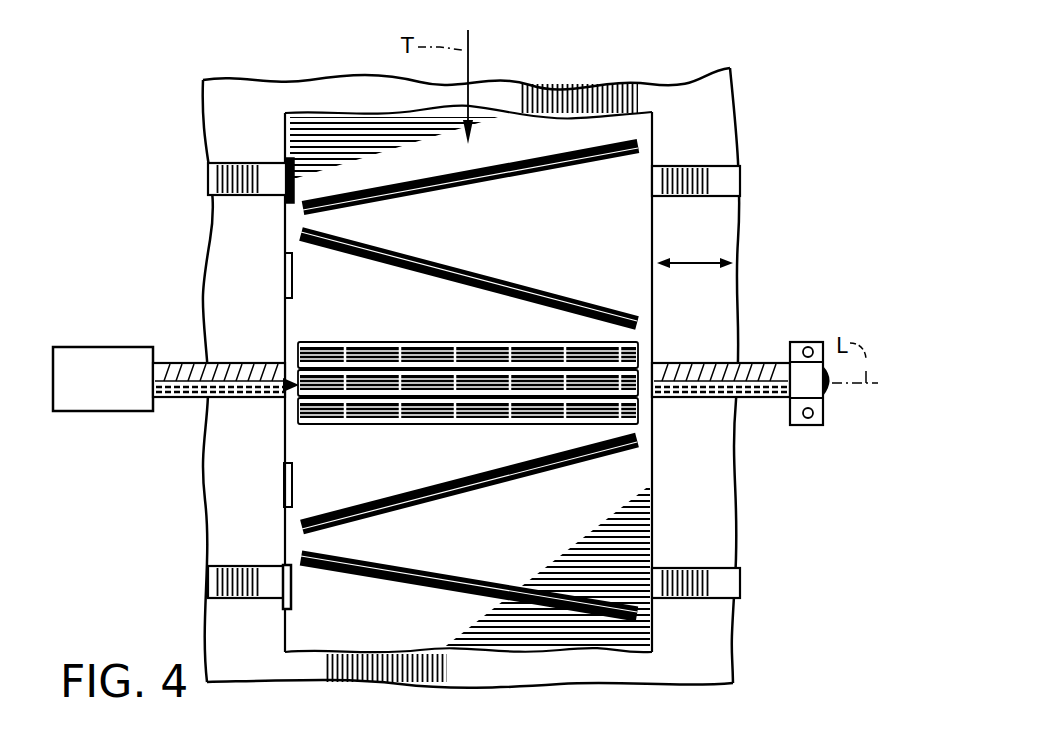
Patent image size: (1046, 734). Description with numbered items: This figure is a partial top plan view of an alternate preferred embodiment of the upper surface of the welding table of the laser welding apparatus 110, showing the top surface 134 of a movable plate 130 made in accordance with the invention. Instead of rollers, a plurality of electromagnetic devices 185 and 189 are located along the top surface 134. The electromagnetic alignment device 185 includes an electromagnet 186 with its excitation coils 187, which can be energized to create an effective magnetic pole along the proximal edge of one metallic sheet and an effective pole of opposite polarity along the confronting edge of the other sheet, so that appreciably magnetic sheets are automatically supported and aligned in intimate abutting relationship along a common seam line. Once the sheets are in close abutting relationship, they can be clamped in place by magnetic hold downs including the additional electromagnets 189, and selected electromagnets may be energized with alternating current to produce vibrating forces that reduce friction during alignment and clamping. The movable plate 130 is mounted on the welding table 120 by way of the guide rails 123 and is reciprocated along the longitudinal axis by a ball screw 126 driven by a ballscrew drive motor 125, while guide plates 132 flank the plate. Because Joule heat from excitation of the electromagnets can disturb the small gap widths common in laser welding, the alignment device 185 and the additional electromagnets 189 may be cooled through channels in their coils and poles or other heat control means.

The shaker apparatus 110 is at (649, 60).
The frame 120 is at (744, 507).
The mounting bolts 123 is at (723, 165).
The drive motor 125 is at (122, 388).
The lead screw 126 is at (193, 362).
The movable plate 130 is at (661, 104).
The guide plates 132 is at (288, 272).
The top surface 134 is at (578, 237).
The electromagnetic alignment device 185 is at (435, 375).
The electromagnet 186 is at (271, 394).
The excitation coils 187 is at (440, 350).
The additional electromagnets 189 is at (414, 203).